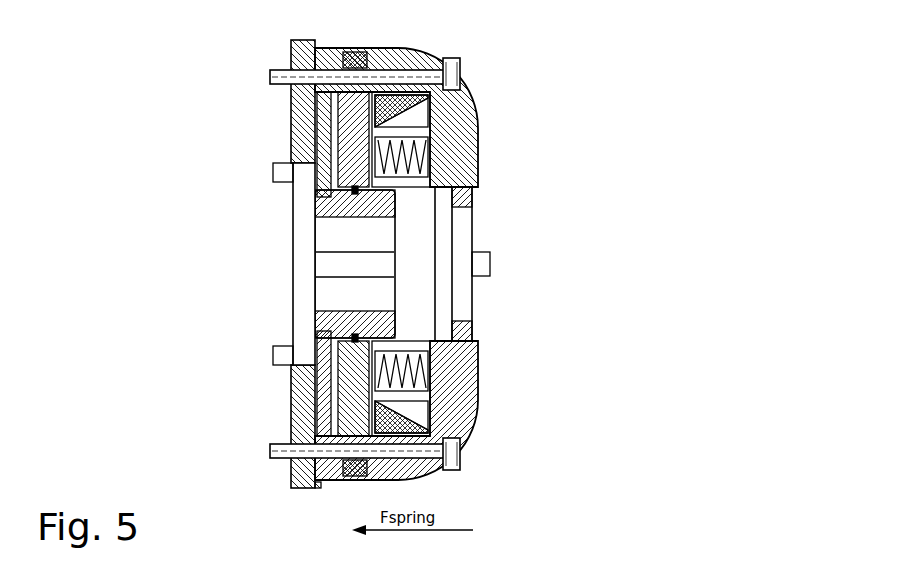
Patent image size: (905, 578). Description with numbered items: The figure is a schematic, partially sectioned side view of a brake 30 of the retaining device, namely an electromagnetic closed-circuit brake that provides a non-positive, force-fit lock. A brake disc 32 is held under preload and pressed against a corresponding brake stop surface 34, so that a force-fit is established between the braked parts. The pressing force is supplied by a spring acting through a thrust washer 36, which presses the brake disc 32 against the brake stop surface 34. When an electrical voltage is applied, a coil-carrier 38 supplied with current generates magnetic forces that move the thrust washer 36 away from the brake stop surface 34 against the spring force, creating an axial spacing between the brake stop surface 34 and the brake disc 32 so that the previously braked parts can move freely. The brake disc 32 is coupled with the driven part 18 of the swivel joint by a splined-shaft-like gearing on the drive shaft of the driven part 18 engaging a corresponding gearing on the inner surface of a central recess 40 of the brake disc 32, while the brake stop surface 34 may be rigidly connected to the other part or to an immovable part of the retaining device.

The driven part 18 is at (387, 213).
The brake 30 is at (560, 386).
The brake disc 32 is at (430, 130).
The brake stop surface 34 is at (292, 110).
The thrust washer 36 is at (470, 102).
The coil-carrier 38 is at (480, 413).
The central recess 40 is at (387, 213).